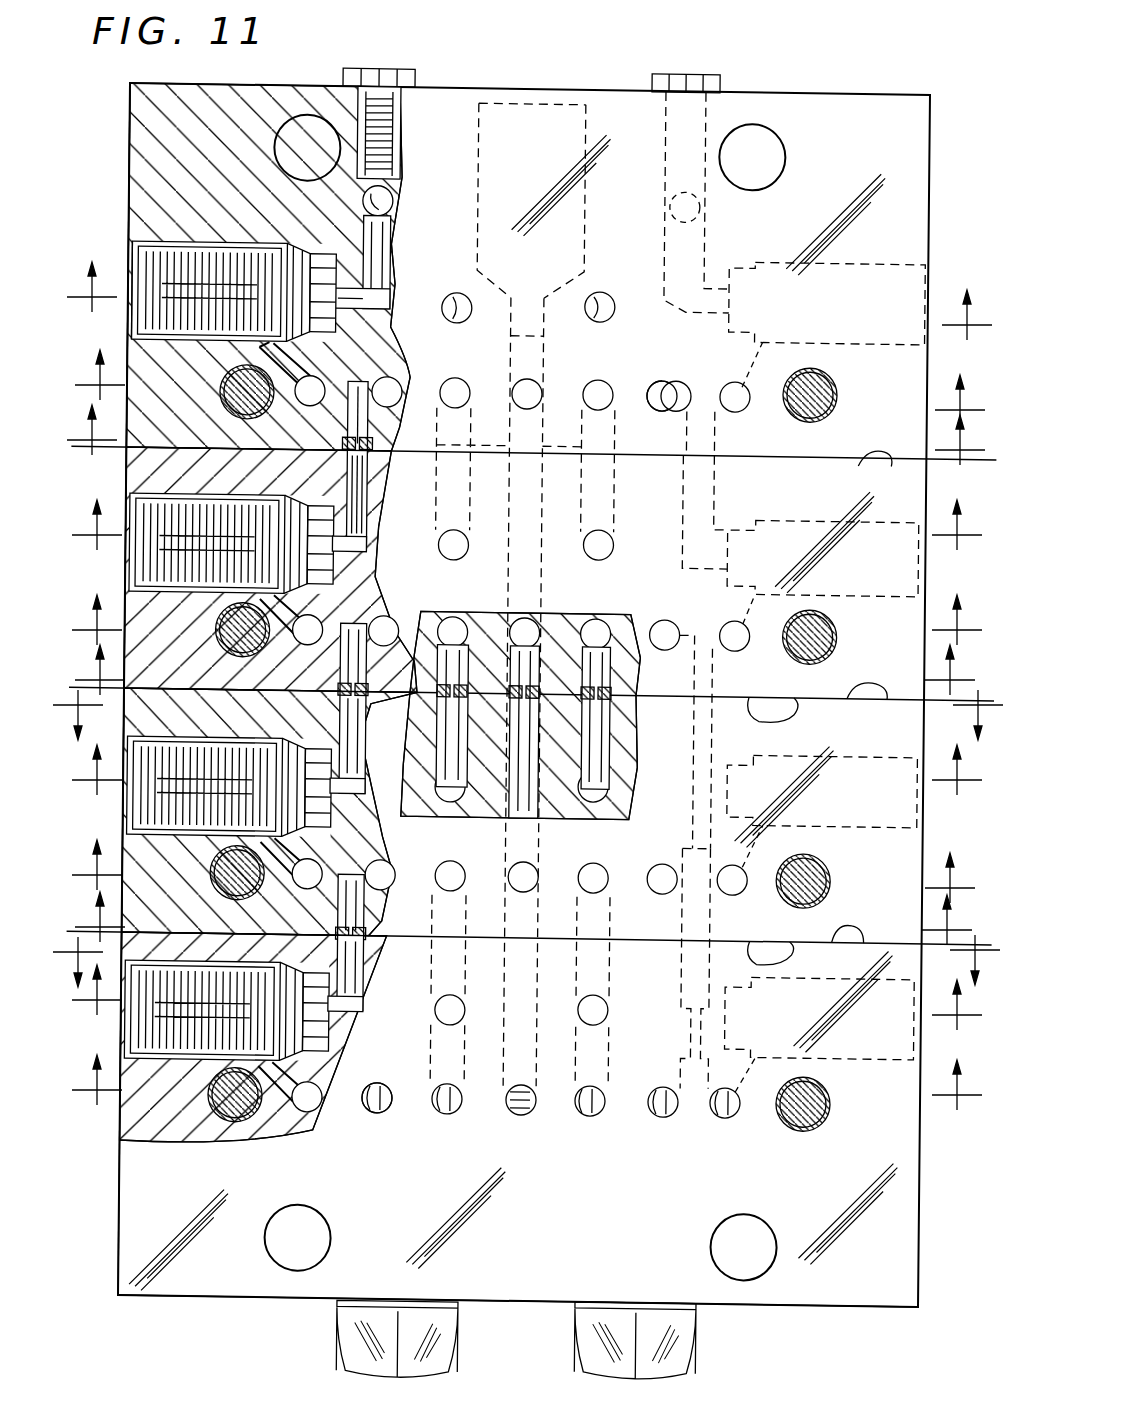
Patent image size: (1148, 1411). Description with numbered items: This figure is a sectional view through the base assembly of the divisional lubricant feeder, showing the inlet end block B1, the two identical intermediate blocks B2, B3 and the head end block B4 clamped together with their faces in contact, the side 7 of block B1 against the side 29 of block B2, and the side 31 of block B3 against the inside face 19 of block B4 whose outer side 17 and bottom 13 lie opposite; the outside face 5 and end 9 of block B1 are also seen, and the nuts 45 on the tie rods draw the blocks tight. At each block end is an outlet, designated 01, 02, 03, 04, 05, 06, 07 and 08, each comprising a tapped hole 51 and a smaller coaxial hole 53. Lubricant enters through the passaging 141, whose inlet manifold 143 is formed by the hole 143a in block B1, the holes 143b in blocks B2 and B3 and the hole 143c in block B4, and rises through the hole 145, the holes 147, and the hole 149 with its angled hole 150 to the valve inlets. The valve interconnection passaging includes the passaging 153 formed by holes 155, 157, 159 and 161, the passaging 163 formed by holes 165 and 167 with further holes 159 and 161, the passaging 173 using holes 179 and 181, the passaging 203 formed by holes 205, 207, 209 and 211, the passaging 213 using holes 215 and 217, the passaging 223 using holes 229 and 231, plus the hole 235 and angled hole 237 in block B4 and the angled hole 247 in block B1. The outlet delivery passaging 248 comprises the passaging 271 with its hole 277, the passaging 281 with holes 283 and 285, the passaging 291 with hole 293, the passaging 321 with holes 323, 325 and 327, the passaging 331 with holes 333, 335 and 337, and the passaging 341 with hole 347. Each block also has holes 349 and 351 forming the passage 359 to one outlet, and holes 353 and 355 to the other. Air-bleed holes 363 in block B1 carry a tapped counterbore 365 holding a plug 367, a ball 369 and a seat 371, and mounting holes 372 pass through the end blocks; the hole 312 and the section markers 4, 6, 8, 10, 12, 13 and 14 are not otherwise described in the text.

The side 5 is at (806, 92).
The side 17 is at (838, 1310).
The side 19 is at (852, 928).
The side 29 is at (875, 565).
The side 31 is at (787, 831).
The nuts 45 is at (575, 1340).
The tapped hole 51 is at (132, 255).
The hole 53 is at (320, 380).
The passaging 141 is at (520, 100).
The inlet manifold 143 is at (520, 306).
The hole 143a is at (588, 228).
The lateral holes 143b is at (536, 612).
The hole 143c is at (540, 1075).
The hole 145 is at (535, 380).
The holes 147 is at (490, 612).
The hole 149 is at (515, 1112).
The hole 150 is at (537, 1082).
The passaging 153 is at (466, 495).
The hole 155 is at (460, 380).
The hole 157 is at (470, 412).
The hole 159 is at (466, 520).
The hole 161 is at (463, 545).
The passaging 163 is at (448, 625).
The hole 165 is at (458, 612).
The hole 167 is at (462, 910).
The passaging 173 is at (440, 1010).
The hole 179 is at (460, 1010).
The hole 181 is at (455, 1040).
The passaging 203 is at (605, 495).
The hole 205 is at (602, 380).
The hole 207 is at (615, 412).
The hole 209 is at (610, 520).
The hole 211 is at (610, 548).
The passaging 213 is at (378, 400).
The hole 215 is at (375, 425).
The hole 217 is at (605, 672).
The passaging 223 is at (608, 965).
The hole 229 is at (605, 995).
The hole 231 is at (608, 1040).
The hole 235 is at (660, 1112).
The hole 237 is at (585, 1112).
The hole 247 is at (465, 298).
The passaging 248 is at (875, 252).
The passaging 271 is at (372, 470).
The horizontal hole 277 is at (372, 485).
The passaging 281 is at (362, 722).
The hole 283 is at (380, 615).
The horizontal hole 285 is at (365, 672).
The passaging 291 is at (372, 962).
The hole 293 is at (365, 980).
The bolt hole 312 is at (297, 1237).
The passaging 321 is at (722, 486).
The hole 323 is at (672, 380).
The horizontal hole 325 is at (680, 415).
The horizontal hole 327 is at (720, 510).
The passaging 331 is at (720, 670).
The hole 333 is at (680, 622).
The horizontal hole 335 is at (705, 900).
The hole 337 is at (736, 770).
The passaging 341 is at (712, 918).
The hole 347 is at (640, 1062).
The hole 349 is at (392, 383).
The hole 351 is at (305, 368).
The hole 353 is at (740, 404).
The hole 355 is at (800, 362).
The passage 359 is at (225, 378).
The holes 363 is at (394, 232).
The tapped counterbore 365 is at (398, 172).
The plug 367 is at (388, 66).
The ball 369 is at (394, 200).
The seat 371 is at (372, 262).
The holes 372 is at (525, 697).
The outlet 01 is at (928, 270).
The outlet 02 is at (128, 512).
The outlet 03 is at (128, 762).
The outlet 04 is at (128, 1022).
The outlet 05 is at (128, 275).
The outlet 06 is at (925, 520).
The outlet 07 is at (925, 775).
The outlet 08 is at (925, 1045).
The inlet end block B1 is at (130, 148).
The intermediate block B2 is at (130, 478).
The intermediate block B3 is at (130, 730).
The head end block B4 is at (120, 1205).
The section line 4 is at (527, 442).
The section line 6 is at (530, 389).
The side 7 is at (527, 654).
The section line 8 is at (527, 753).
The end 9 is at (527, 1007).
The section line 10 is at (523, 1092).
The section line 12 is at (529, 672).
The bottom 13 is at (528, 838).
The section line 14 is at (524, 918).